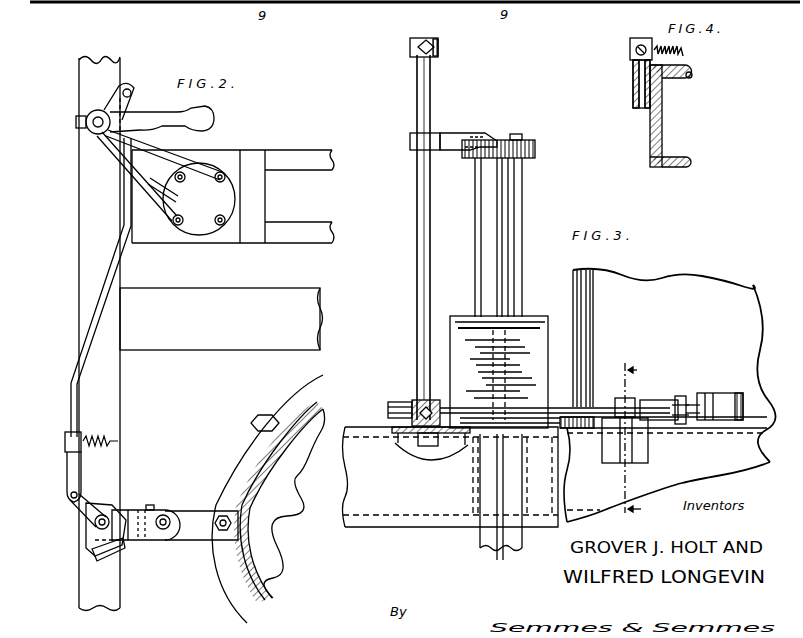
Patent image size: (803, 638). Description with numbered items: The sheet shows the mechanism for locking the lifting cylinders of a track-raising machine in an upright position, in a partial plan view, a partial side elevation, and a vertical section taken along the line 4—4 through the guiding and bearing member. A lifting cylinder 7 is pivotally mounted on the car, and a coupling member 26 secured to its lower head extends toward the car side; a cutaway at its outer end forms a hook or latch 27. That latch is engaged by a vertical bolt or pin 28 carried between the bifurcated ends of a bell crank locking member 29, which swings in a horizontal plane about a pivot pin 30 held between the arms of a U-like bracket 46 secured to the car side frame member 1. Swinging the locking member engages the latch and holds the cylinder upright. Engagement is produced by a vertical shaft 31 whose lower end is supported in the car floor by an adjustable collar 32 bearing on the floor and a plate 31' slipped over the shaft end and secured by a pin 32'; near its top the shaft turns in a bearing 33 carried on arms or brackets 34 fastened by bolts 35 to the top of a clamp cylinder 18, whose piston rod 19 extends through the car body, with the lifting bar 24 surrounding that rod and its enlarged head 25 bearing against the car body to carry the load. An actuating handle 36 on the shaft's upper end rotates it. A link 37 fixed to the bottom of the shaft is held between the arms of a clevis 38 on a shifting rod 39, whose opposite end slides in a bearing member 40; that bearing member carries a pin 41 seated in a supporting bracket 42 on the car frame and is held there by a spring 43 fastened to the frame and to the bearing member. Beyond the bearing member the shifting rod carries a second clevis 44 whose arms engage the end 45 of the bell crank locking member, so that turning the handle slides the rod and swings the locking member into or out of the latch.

In FIG. 2, the channel post / rail 1 is at (121, 403).
In FIG. 4, the channel post / rail 1 is at (663, 138).
In FIG. 3, the section line 4— 4 is at (637, 440).
In FIG. 3, the lifting cylinder 7 is at (678, 291).
In FIG. 2, the clamp cylinder 18 is at (236, 198).
In FIG. 3, the clamp cylinder 18 is at (523, 200).
In FIG. 3, the piston rod 19 is at (497, 555).
In FIG. 3, the lifting bar 24 is at (480, 545).
In FIG. 3, the enlarged head 25 is at (549, 398).
In FIG. 2, the coupling member 26 is at (188, 509).
In FIG. 2, the hook or latch 27 is at (150, 507).
In FIG. 2, the vertical bolt or pin 28 is at (165, 531).
In FIG. 2, the bell crank locking member 29 is at (141, 542).
In FIG. 3, the bell crank locking member 29 is at (711, 421).
In FIG. 2, the pivot pin 30 is at (100, 526).
In FIG. 3, the pivot pin 30 is at (439, 50).
In FIG. 3, the vertical shaft 31 is at (407, 237).
In FIG. 3, the plate 31' is at (425, 459).
In FIG. 3, the adjustable collar 32 is at (413, 442).
In FIG. 3, the pin 32' is at (444, 476).
In FIG. 3, the bearing 33 is at (436, 133).
In FIG. 2, the arms or brackets 34 is at (158, 163).
In FIG. 3, the arms or brackets 34 is at (468, 136).
In FIG. 2, the bolts 35 is at (222, 170).
In FIG. 3, the bolts 35 is at (522, 137).
In FIG. 2, the actuating handle 36 is at (200, 115).
In FIG. 2, the link 37 is at (113, 104).
In FIG. 3, the link 37 is at (390, 416).
In FIG. 2, the clevis 38 is at (134, 110).
In FIG. 3, the clevis 38 is at (400, 402).
In FIG. 2, the shifting rod 39 is at (90, 337).
In FIG. 3, the shifting rod 39 is at (470, 403).
In FIG. 4, the shifting rod 39 is at (641, 45).
In FIG. 2, the bearing member 40 is at (65, 446).
In FIG. 3, the bearing member 40 is at (617, 400).
In FIG. 4, the bearing member 40 is at (630, 50).
In FIG. 3, the pin 41 is at (619, 463).
In FIG. 4, the pin 41 is at (641, 80).
In FIG. 3, the supporting bracket 42 is at (611, 455).
In FIG. 4, the supporting bracket 42 is at (637, 96).
In FIG. 2, the spring 43 is at (105, 438).
In FIG. 4, the spring 43 is at (676, 61).
In FIG. 2, the clevis 44 is at (67, 481).
In FIG. 3, the clevis 44 is at (660, 395).
In FIG. 2, the end of bell crank locking member 45 is at (80, 508).
In FIG. 3, the end of bell crank locking member 45 is at (681, 425).
In FIG. 2, the U-like bracket 46 is at (96, 553).
In FIG. 3, the U-like bracket 46 is at (726, 393).